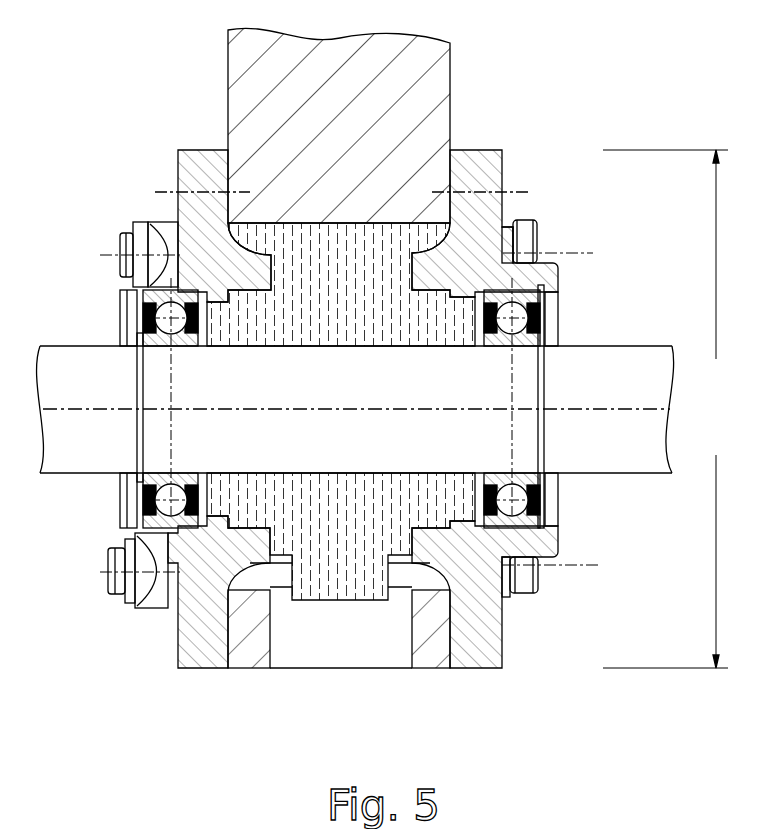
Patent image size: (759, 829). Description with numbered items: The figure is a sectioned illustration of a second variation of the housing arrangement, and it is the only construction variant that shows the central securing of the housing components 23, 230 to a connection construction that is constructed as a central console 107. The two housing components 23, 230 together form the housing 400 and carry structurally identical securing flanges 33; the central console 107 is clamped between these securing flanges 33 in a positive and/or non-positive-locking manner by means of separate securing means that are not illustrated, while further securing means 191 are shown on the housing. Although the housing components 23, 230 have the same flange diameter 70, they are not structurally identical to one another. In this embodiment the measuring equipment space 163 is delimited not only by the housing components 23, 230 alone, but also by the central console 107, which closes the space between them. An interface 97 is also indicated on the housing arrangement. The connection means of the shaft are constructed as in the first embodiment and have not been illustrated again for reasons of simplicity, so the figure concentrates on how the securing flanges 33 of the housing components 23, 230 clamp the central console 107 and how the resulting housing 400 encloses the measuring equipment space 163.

The central console 107 is at (432, 66).
The housing 400 is at (178, 160).
The measuring equipment space 163 is at (366, 322).
The securing means 191 is at (525, 238).
The flange diameter 70 is at (666, 409).
The housing component 23 is at (178, 668).
The securing flange 33 is at (198, 658).
The interface 97 is at (340, 668).
The housing component 230 is at (473, 668).